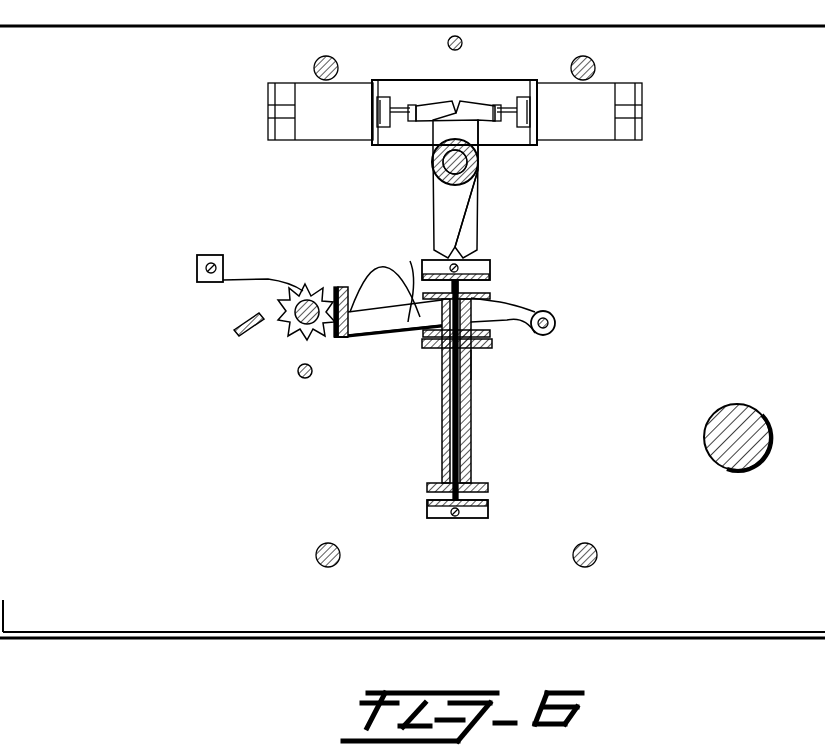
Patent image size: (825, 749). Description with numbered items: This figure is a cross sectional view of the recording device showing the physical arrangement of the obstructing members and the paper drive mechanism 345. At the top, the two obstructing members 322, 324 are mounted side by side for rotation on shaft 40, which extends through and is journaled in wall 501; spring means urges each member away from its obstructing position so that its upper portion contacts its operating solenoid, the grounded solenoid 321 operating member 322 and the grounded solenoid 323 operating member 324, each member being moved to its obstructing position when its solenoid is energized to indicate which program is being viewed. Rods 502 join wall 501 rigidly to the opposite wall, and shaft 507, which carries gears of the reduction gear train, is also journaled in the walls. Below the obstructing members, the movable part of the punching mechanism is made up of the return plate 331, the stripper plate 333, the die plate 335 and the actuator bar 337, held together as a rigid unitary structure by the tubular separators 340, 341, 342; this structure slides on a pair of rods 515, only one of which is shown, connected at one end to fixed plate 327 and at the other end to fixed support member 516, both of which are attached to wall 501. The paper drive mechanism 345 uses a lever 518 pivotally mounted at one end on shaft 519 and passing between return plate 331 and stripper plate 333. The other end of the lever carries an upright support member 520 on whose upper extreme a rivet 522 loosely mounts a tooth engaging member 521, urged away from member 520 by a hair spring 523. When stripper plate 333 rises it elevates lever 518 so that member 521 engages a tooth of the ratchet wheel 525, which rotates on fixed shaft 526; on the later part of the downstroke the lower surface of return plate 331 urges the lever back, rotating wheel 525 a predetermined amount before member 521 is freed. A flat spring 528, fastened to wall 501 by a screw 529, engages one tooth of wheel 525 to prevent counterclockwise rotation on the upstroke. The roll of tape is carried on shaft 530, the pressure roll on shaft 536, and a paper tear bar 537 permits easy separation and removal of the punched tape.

The shaft 40 is at (478, 167).
The solenoid 321 is at (589, 111).
The obstructing member 322 is at (436, 214).
The solenoid 323 is at (320, 111).
The obstructing member 324 is at (472, 212).
The fixed plate 327 is at (489, 270).
The return plate 331 is at (491, 296).
The stripper plate 333 is at (489, 338).
The die plate 335 is at (478, 356).
The actuator bar 337 is at (489, 486).
The tubular separator 340 is at (403, 286).
The tubular separator 341 is at (490, 349).
The tubular separator 342 is at (472, 432).
The paper drive mechanism 345 is at (298, 243).
The wall 501 is at (190, 451).
The rods 502 is at (315, 70).
The shaft 507 is at (461, 45).
The rods 515 is at (462, 287).
The fixed support member 516 is at (490, 505).
The lever 518 is at (528, 307).
The shaft 519 is at (555, 328).
The upright support member 520 is at (350, 337).
The tooth engaging member 521 is at (338, 331).
The rivet 522 is at (338, 290).
The hair spring 523 is at (372, 275).
The ratchet wheel 525 is at (286, 326).
The fixed shaft 526 is at (295, 310).
The flat spring 528 is at (269, 280).
The screw 529 is at (197, 273).
The shaft 530 is at (718, 416).
The shaft 536 is at (305, 378).
The paper tear bar 537 is at (236, 331).